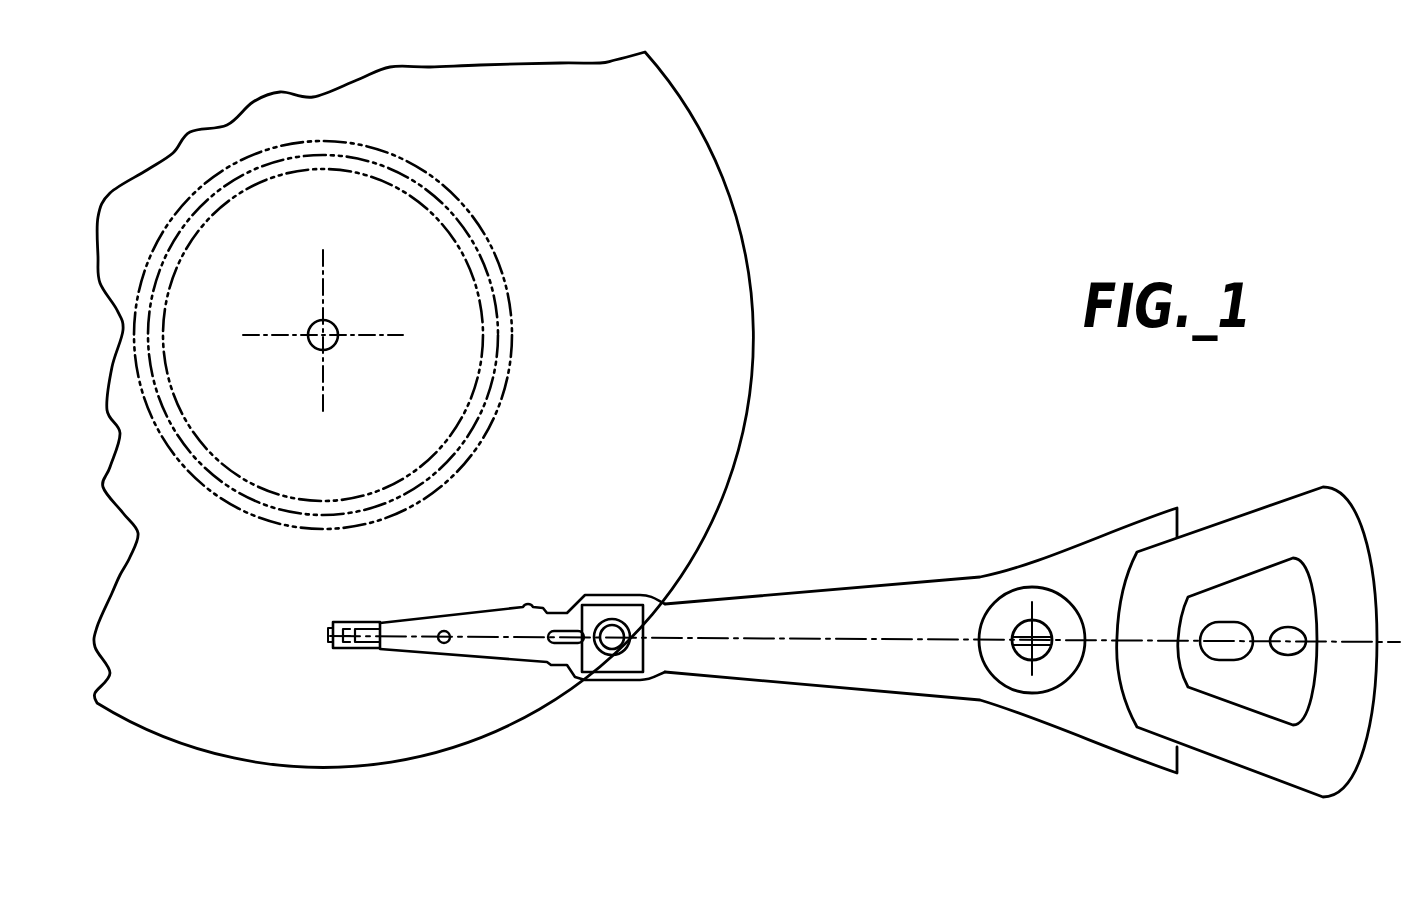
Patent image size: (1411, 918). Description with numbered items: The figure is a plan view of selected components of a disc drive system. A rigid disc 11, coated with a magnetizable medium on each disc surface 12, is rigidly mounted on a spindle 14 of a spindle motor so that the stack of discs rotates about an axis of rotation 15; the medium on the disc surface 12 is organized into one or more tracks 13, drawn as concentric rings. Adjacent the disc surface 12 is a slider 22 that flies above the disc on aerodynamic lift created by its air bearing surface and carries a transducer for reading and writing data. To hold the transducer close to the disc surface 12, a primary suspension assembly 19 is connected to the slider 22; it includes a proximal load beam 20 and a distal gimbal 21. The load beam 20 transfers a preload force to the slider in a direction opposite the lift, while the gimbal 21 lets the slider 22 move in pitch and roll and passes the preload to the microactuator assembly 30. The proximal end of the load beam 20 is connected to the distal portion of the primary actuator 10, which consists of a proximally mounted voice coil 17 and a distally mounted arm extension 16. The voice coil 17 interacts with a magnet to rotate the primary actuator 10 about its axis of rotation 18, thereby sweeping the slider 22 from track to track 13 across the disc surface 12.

The primary actuator 10 is at (873, 557).
The rigid disc 11 is at (798, 142).
The disc surface 12 is at (708, 356).
The tracks 13 is at (314, 531).
The spindle 14 is at (336, 344).
The axis of rotation 15 is at (312, 343).
The arm extension 16 is at (779, 680).
The voice coil 17 is at (1272, 782).
The axis of rotation 18 is at (1030, 655).
The primary suspension assembly 19 is at (421, 666).
The load beam 20 is at (478, 627).
The gimbal 21 is at (343, 651).
The slider 22 is at (330, 652).
The microactuator assembly 30 is at (326, 636).